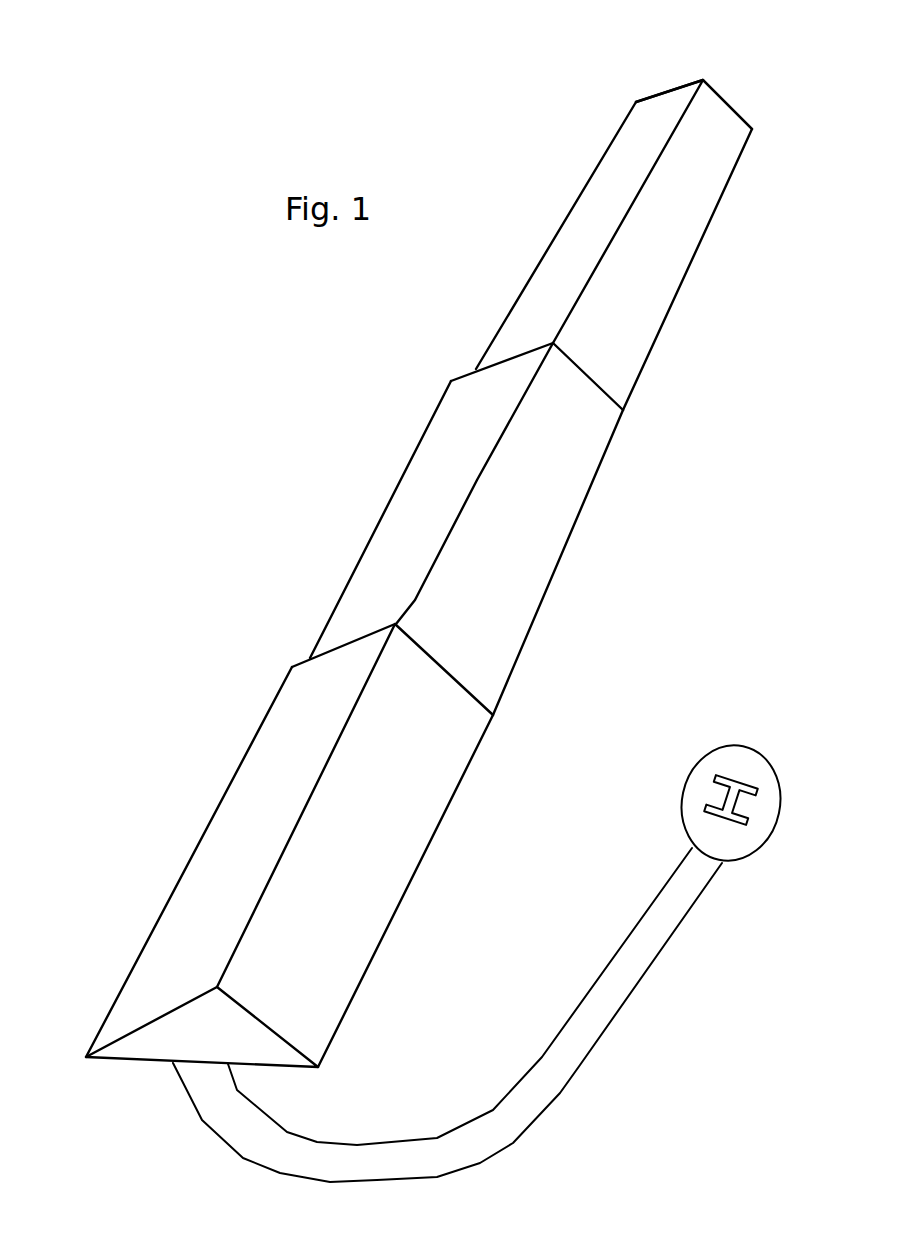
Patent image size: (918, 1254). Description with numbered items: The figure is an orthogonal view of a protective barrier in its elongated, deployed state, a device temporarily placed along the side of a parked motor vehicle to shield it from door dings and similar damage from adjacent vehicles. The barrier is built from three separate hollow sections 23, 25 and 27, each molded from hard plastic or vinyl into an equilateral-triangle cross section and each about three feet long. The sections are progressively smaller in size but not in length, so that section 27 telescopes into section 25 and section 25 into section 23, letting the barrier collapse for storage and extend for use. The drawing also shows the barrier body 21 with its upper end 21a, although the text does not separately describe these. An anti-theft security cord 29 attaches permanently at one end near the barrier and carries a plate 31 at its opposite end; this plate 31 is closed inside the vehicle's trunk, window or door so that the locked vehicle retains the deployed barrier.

The handle body 21 is at (98, 1028).
The upper end of handle body 21a is at (728, 102).
The hollow section 23 is at (218, 806).
The hollow section 25 is at (398, 484).
The hollow section 27 is at (587, 182).
The security cord 29 is at (590, 1048).
The plate 31 is at (770, 757).